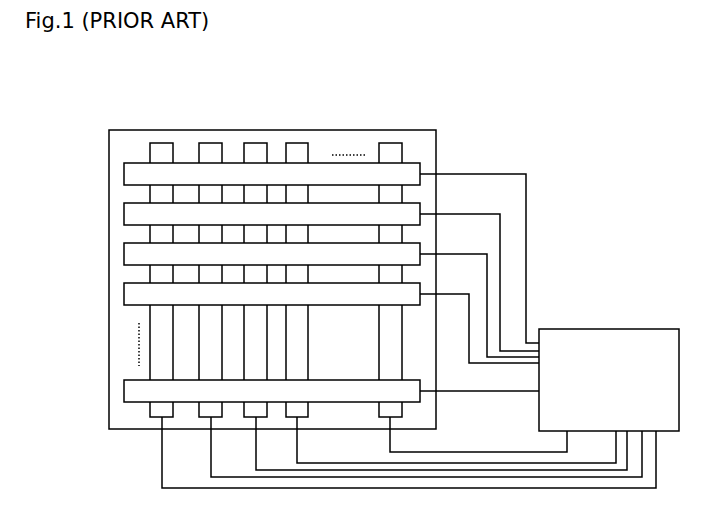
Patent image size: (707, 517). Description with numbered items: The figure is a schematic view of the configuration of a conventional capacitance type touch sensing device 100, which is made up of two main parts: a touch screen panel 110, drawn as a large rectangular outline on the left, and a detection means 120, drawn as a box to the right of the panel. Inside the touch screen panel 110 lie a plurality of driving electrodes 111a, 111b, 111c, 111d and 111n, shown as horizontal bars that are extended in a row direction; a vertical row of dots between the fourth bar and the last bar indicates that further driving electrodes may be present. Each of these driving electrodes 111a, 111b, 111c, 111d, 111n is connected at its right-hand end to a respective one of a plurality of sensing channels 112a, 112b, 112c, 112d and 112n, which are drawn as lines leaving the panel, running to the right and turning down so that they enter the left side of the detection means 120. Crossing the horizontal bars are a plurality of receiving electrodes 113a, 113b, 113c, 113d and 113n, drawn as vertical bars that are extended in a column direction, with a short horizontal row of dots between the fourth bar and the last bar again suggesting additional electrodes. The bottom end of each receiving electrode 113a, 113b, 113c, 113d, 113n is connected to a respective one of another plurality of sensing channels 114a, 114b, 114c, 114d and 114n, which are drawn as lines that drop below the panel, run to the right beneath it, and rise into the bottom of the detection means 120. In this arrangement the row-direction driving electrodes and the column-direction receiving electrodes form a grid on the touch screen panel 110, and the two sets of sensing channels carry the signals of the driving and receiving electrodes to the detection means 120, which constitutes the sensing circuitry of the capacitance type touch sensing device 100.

The capacitance type touch sensing device 100 is at (644, 103).
The touch screen panel 110 is at (436, 130).
The detection means 120 is at (609, 380).
The driving electrode 111a is at (124, 173).
The driving electrode 111b is at (124, 213).
The driving electrode 111c is at (124, 253).
The driving electrode 111d is at (124, 293).
The driving electrode 111n is at (124, 391).
The sensing channel 112a is at (479, 249).
The sensing channel 112b is at (479, 273).
The sensing channel 112c is at (479, 296).
The sensing channel 112d is at (479, 319).
The sensing channel 112n is at (479, 382).
The receiving electrode 113a is at (162, 143).
The receiving electrode 113b is at (211, 143).
The receiving electrode 113c is at (256, 143).
The receiving electrode 113d is at (297, 143).
The receiving electrode 113n is at (391, 143).
The sensing channel 114a is at (389, 454).
The sensing channel 114b is at (407, 447).
The sensing channel 114c is at (423, 443).
The sensing channel 114d is at (439, 440).
The sensing channel 114n is at (457, 434).